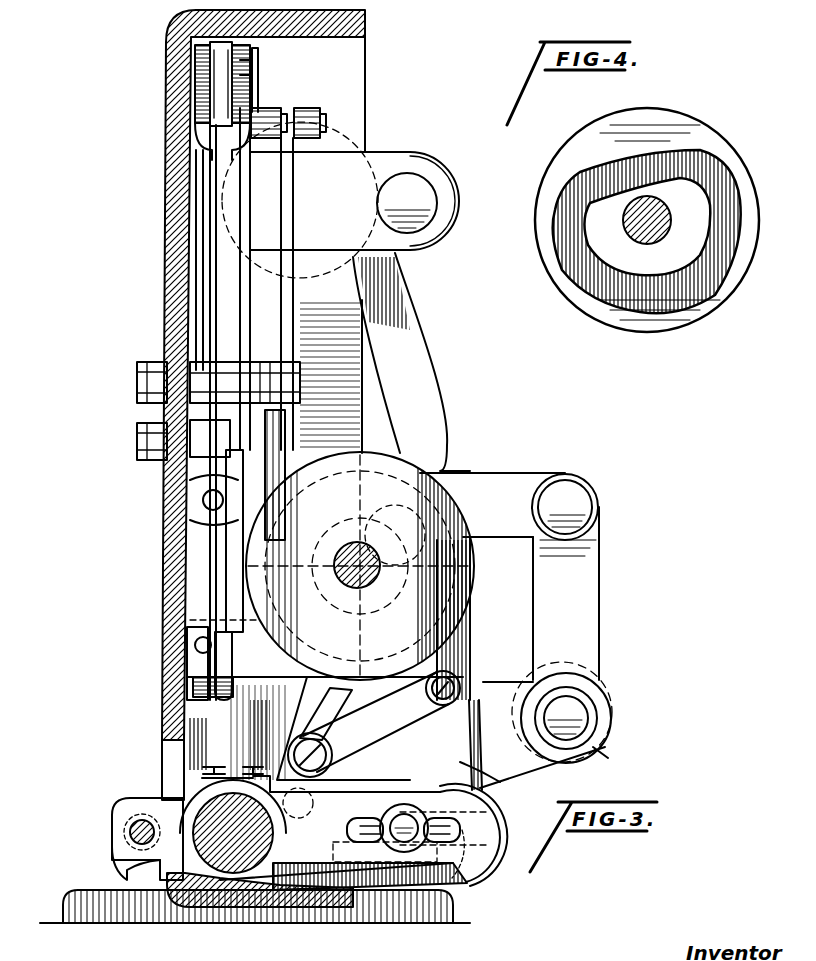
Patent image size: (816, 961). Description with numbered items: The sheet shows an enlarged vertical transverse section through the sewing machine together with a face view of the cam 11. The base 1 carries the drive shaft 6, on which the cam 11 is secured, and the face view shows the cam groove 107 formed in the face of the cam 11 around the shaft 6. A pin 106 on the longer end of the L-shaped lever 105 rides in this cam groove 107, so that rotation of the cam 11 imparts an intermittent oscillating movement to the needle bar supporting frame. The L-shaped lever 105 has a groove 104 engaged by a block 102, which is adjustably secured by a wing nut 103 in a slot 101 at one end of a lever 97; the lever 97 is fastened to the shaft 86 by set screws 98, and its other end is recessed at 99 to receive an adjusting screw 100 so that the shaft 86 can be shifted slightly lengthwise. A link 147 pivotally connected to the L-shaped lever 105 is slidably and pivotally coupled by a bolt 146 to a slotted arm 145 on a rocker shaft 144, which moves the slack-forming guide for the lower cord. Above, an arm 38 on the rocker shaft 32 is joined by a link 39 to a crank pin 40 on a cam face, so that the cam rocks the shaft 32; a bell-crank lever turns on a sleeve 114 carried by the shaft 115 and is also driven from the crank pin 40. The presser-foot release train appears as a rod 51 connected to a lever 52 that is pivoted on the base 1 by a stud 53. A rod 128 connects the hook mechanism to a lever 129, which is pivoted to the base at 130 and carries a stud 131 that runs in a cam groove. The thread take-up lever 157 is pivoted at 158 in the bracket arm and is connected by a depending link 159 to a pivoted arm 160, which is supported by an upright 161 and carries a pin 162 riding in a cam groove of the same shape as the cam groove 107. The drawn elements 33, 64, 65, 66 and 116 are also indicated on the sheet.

In FIG. 3, the base 1 is at (412, 903).
In FIG. 3, the drive shaft 6 is at (345, 575).
In FIG. 4, the drive shaft 6 is at (663, 213).
In FIG. 3, the cam 11 is at (460, 598).
In FIG. 4, the cam 11 is at (552, 265).
In FIG. 3, the rocker shaft 32 is at (410, 190).
In FIG. 3, the boss 33 is at (448, 200).
In FIG. 3, the arm 38 is at (375, 152).
In FIG. 3, the link 39 is at (415, 335).
In FIG. 3, the crank pin 40 is at (440, 470).
In FIG. 3, the rod 51 is at (310, 112).
In FIG. 3, the lever 52 is at (288, 305).
In FIG. 3, the stud 53 is at (290, 375).
In FIG. 3, the nut 64 is at (268, 110).
In FIG. 3, the rod 65 is at (250, 336).
In FIG. 3, the rod 66 is at (200, 370).
In FIG. 3, the shaft 86 is at (230, 873).
In FIG. 3, the lever 97 is at (300, 880).
In FIG. 3, the set screws 98 is at (253, 766).
In FIG. 3, the recess 99 is at (120, 857).
In FIG. 3, the adjusting screw 100 is at (128, 826).
In FIG. 3, the slot 101 is at (467, 882).
In FIG. 3, the block 102 is at (360, 900).
In FIG. 3, the wing nut 103 is at (417, 808).
In FIG. 3, the groove 104 is at (493, 820).
In FIG. 3, the L-shaped lever 105 is at (483, 787).
In FIG. 3, the pin 106 is at (455, 520).
In FIG. 4, the cam groove 107 is at (600, 296).
In FIG. 3, the sleeve 114 is at (566, 730).
In FIG. 3, the shaft 115 is at (575, 712).
In FIG. 3, the bracket 116 is at (498, 690).
In FIG. 3, the rod 128 is at (195, 652).
In FIG. 3, the lever 129 is at (215, 596).
In FIG. 3, the pivotal connection 130 is at (190, 470).
In FIG. 3, the stud 131 is at (280, 556).
In FIG. 3, the rocker shaft 144 is at (292, 826).
In FIG. 3, the slotted arm 145 is at (290, 718).
In FIG. 3, the bolt 146 is at (325, 745).
In FIG. 3, the link 147 is at (440, 708).
In FIG. 3, the take-up lever 157 is at (215, 62).
In FIG. 3, the pivot 158 is at (252, 62).
In FIG. 3, the depending link 159 is at (213, 290).
In FIG. 3, the pivoted arm 160 is at (525, 470).
In FIG. 3, the upright 161 is at (590, 592).
In FIG. 3, the pin 162 is at (343, 445).